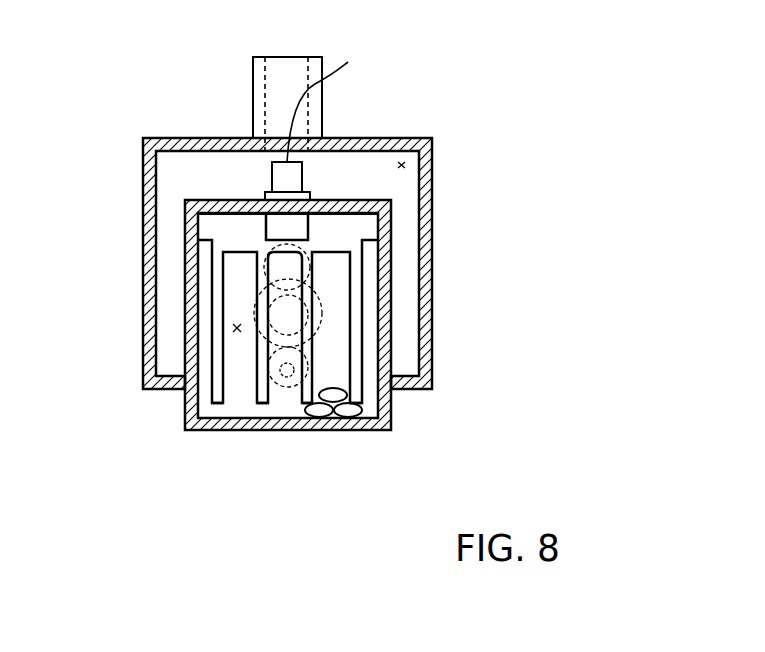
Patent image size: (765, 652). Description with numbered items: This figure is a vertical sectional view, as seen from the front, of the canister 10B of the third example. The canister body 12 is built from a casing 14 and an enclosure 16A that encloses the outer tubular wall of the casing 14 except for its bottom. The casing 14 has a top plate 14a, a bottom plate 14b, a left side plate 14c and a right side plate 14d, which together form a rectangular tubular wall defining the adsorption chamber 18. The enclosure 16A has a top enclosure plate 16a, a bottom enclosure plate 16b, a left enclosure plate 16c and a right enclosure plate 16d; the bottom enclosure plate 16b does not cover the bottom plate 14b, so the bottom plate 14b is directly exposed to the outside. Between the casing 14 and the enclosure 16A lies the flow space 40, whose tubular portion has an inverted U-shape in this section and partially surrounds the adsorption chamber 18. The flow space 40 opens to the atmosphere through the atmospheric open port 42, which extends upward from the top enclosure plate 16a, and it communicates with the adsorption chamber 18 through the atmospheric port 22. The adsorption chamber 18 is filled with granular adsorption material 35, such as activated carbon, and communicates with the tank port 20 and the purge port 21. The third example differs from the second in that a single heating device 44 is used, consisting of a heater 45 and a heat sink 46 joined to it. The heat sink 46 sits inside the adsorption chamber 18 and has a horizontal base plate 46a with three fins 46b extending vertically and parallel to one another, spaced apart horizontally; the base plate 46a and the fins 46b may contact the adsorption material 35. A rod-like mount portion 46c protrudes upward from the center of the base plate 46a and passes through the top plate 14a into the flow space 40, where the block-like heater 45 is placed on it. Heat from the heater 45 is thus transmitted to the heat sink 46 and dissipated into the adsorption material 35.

The canister 10B is at (429, 81).
The canister body 12 is at (467, 190).
The casing 14 is at (177, 282).
The top plate 14a is at (215, 202).
The bottom plate 14b is at (217, 425).
The left side plate 14c is at (192, 404).
The right side plate 14d is at (382, 325).
The enclosure 16A is at (439, 280).
The top enclosure plate 16a is at (385, 145).
The bottom enclosure plate 16b is at (413, 384).
The left enclosure plate 16c is at (150, 177).
The right enclosure plate 16d is at (425, 210).
The adsorption chamber 18 is at (234, 328).
The tank port 20 is at (318, 281).
The purge port 21 is at (289, 388).
The atmospheric port 22 is at (313, 338).
The adsorption material 35 is at (347, 416).
The flow space 40 is at (404, 163).
The atmospheric open port 42 is at (260, 78).
The heating device 44 is at (311, 168).
The heater 45 is at (264, 181).
The heat sink 46 is at (359, 191).
The base plate 46a is at (240, 243).
The fins 46b is at (218, 362).
The mount portion 46c is at (280, 225).